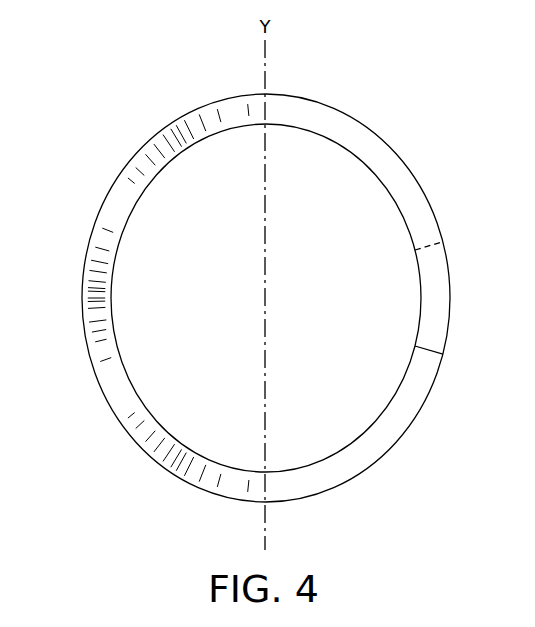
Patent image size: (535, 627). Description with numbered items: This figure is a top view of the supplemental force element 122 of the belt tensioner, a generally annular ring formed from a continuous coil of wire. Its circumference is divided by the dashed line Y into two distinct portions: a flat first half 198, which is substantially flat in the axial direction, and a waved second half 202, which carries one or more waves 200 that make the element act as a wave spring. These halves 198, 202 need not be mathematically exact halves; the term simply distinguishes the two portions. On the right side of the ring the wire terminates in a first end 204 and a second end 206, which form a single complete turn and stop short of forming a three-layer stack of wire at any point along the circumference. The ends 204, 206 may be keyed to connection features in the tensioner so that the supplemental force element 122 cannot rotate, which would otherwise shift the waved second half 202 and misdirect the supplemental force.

The supplemental force element 122 is at (380, 105).
The flat first half 198 is at (356, 310).
The waves 200 is at (120, 173).
The waved second half 202 is at (210, 310).
The first end 204 is at (432, 354).
The second end 206 is at (443, 240).